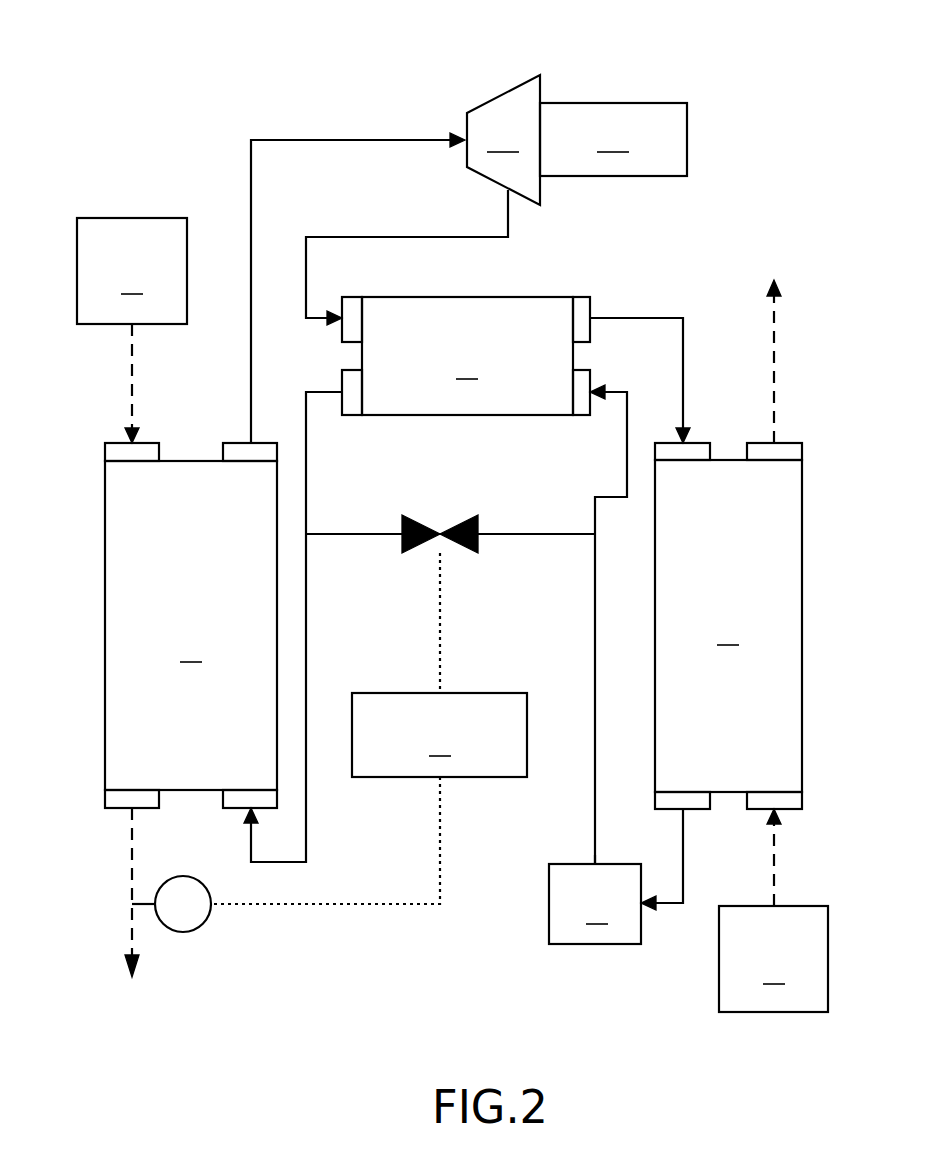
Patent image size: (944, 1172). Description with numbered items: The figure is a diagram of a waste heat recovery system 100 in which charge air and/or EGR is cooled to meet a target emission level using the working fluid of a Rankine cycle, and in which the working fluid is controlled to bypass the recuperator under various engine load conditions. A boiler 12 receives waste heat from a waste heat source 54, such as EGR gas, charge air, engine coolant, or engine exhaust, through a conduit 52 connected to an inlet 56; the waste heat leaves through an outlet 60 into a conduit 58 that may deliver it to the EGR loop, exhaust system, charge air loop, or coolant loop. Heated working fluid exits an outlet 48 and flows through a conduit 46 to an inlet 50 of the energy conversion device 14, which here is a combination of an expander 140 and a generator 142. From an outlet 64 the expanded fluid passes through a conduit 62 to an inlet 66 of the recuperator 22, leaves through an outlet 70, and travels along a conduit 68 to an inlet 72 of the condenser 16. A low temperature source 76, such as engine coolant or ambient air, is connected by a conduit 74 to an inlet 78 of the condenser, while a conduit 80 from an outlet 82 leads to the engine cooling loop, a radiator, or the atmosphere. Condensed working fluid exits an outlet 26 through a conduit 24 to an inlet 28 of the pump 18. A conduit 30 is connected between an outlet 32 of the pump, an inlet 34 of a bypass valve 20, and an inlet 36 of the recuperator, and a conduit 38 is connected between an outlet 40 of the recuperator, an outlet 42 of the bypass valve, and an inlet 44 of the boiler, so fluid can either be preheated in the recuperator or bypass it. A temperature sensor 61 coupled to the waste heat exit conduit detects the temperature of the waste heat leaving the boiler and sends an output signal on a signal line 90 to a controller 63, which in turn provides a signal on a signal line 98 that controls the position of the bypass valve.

The system 100 is at (843, 190).
The energy conversion device 14 is at (577, 107).
The expander 140 is at (503, 140).
The generator 142 is at (613, 139).
The conduit 46 is at (251, 190).
The inlet 50 is at (458, 136).
The conduit 62 is at (358, 234).
The outlet 64 is at (507, 191).
The recuperator 22 is at (498, 365).
The inlet 66 is at (350, 297).
The outlet 70 is at (588, 297).
The outlet 40 is at (347, 416).
The inlet 36 is at (580, 416).
The conduit 68 is at (684, 350).
The condenser 16 is at (745, 623).
The inlet 72 is at (700, 443).
The outlet 82 is at (786, 443).
The outlet 26 is at (680, 810).
The inlet 78 is at (803, 800).
The conduit 80 is at (777, 348).
The conduit 30 is at (595, 578).
The outlet 32 is at (595, 864).
The conduit 38 is at (306, 580).
The inlet 44 is at (223, 808).
The bypass valve 20 is at (450, 494).
The outlet 42 is at (400, 530).
The inlet 34 is at (490, 530).
The signal line 98 is at (440, 640).
The controller 63 is at (439, 735).
The signal line 90 is at (380, 906).
The boiler 12 is at (162, 628).
The inlet 56 is at (115, 443).
The outlet 48 is at (240, 443).
The outlet 60 is at (122, 808).
The waste heat source 54 is at (132, 271).
The conduit 52 is at (130, 360).
The conduit 58 is at (130, 885).
The temperature sensor 61 is at (190, 930).
The pump 18 is at (595, 904).
The conduit 24 is at (684, 868).
The inlet 28 is at (642, 906).
The low temperature source 76 is at (773, 959).
The conduit 74 is at (777, 875).